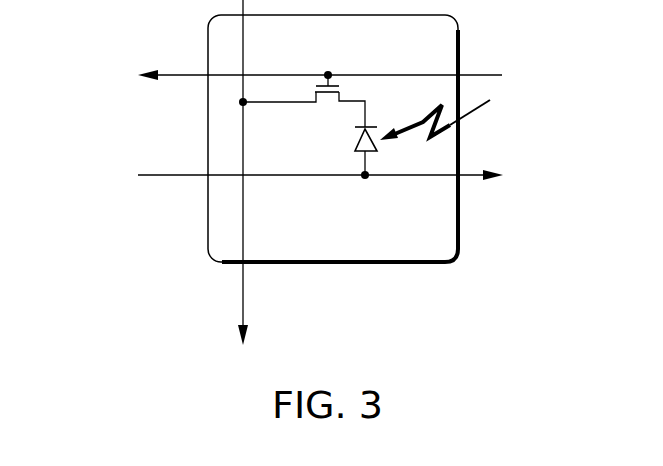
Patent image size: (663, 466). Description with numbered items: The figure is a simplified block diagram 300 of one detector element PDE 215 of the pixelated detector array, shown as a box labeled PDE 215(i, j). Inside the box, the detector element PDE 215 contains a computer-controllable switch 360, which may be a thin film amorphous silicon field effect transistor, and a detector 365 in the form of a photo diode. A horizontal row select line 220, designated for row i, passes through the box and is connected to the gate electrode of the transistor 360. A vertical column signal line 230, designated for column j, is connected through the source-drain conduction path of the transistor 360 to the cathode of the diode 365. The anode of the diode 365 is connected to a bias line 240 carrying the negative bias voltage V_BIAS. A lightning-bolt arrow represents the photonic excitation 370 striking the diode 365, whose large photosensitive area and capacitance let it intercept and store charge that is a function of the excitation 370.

The simplified block diagram 300 is at (577, 56).
The detector element PDE 215 is at (440, 64).
The row select line 220 is at (193, 77).
The column signal line 230 is at (243, 298).
The bias line 240 is at (193, 178).
The computer-controllable switch 360 is at (327, 93).
The detector diode 365 is at (358, 153).
The excitation 370 is at (451, 124).